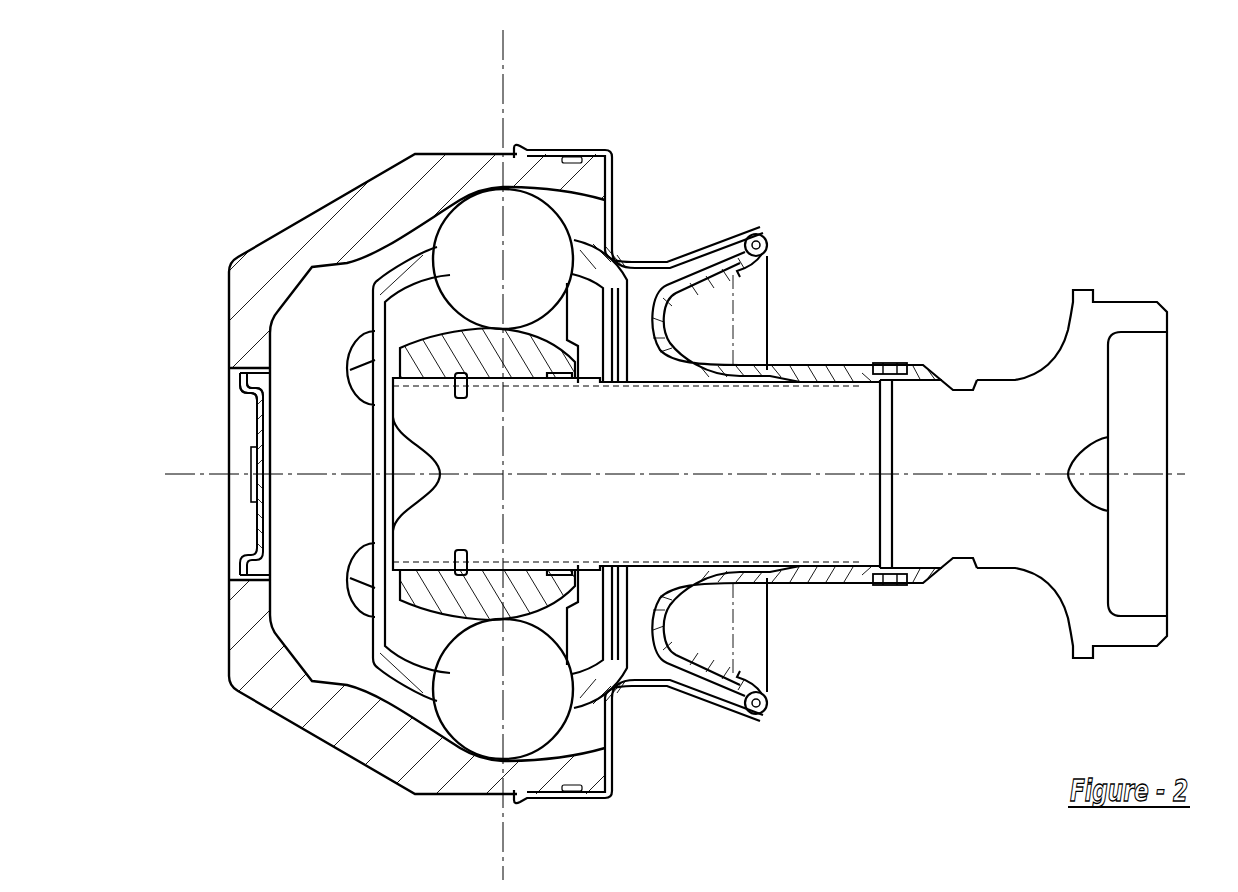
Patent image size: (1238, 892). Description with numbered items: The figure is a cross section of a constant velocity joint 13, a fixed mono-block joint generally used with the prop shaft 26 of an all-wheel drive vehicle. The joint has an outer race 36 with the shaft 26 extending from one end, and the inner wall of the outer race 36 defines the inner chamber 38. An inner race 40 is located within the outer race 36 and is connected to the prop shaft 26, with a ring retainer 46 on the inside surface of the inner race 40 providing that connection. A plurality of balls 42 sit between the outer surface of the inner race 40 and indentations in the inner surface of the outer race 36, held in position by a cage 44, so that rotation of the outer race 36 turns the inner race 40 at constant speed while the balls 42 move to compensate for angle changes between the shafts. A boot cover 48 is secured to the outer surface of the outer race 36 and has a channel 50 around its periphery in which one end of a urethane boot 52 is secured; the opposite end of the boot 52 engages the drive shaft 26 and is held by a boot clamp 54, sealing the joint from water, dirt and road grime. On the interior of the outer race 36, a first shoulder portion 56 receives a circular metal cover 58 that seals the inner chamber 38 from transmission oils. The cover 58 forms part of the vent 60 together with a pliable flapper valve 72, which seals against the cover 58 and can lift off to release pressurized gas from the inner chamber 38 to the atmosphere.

The constant velocity joint 13 is at (847, 187).
The prop shaft 26 is at (997, 565).
The outer race 36 is at (382, 190).
The inner chamber 38 is at (350, 300).
The inner race 40 is at (533, 593).
The balls 42 is at (533, 213).
The cage 44 is at (600, 264).
The ring retainer 46 is at (470, 395).
The boot cover 48 is at (607, 807).
The channel 50 is at (747, 232).
The boot 52 is at (770, 367).
The boot clamp 54 is at (900, 362).
The first shoulder portion 56 is at (230, 575).
The cover 58 is at (250, 410).
The vent 60 is at (255, 475).
The flapper valve 72 is at (253, 497).